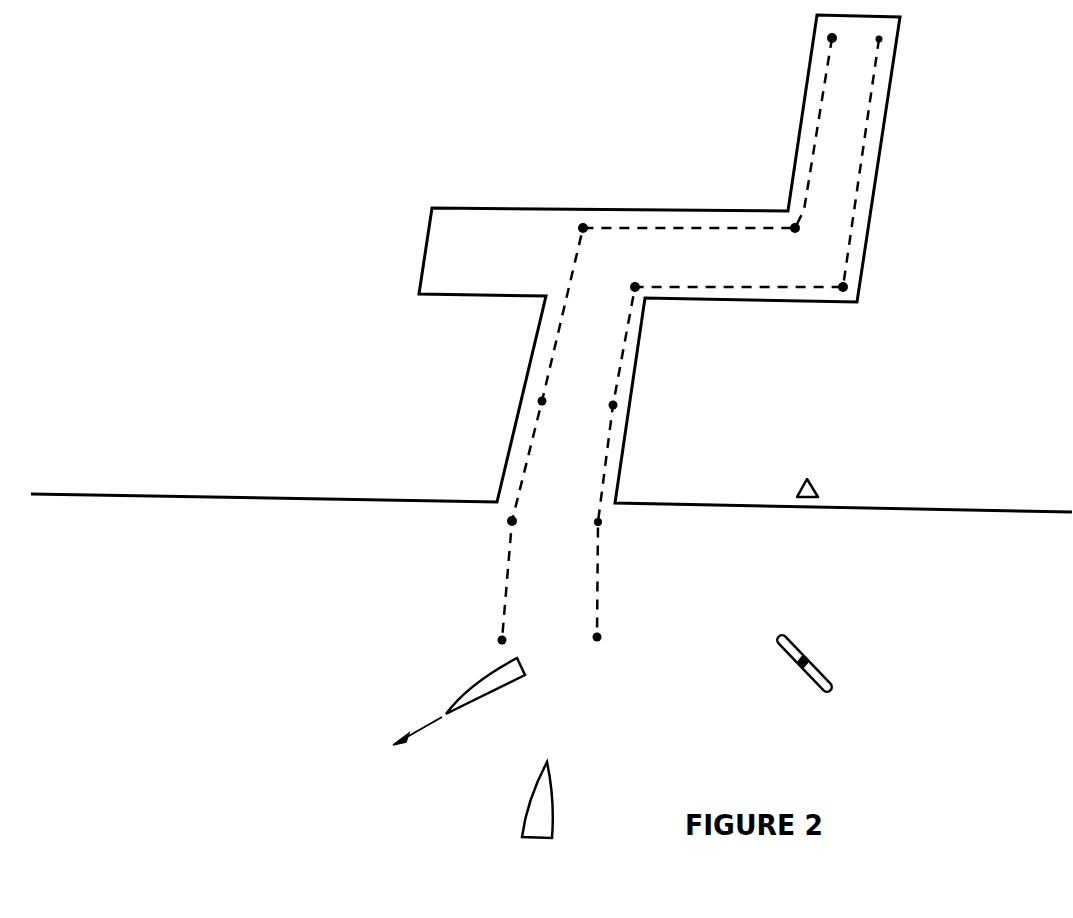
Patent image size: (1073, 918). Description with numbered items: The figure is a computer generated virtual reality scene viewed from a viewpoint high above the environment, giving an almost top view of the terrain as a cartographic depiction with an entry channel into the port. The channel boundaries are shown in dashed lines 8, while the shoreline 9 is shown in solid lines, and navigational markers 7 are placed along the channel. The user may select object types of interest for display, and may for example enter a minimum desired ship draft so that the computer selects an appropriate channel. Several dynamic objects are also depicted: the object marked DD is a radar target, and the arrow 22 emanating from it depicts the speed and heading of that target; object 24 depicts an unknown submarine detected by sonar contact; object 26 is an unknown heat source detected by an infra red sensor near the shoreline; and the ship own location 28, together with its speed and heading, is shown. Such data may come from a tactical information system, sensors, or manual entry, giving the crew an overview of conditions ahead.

The navigational markers 7 is at (865, 43).
The dashed lines 8 is at (533, 463).
The shoreline 9 is at (914, 517).
The arrow 22 is at (532, 675).
The unknown submarine 24 is at (823, 653).
The unknown heat source 26 is at (823, 483).
The ship own location 28 is at (562, 810).